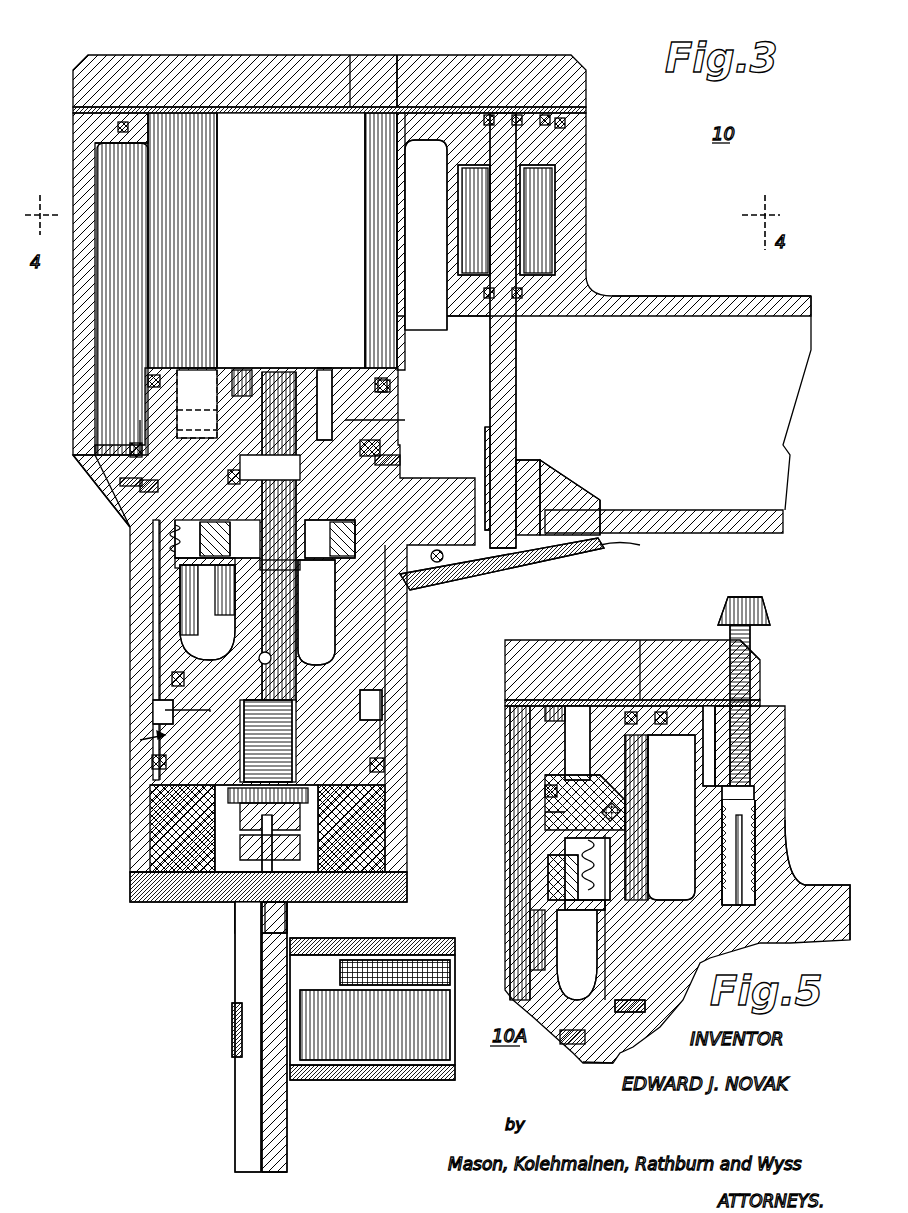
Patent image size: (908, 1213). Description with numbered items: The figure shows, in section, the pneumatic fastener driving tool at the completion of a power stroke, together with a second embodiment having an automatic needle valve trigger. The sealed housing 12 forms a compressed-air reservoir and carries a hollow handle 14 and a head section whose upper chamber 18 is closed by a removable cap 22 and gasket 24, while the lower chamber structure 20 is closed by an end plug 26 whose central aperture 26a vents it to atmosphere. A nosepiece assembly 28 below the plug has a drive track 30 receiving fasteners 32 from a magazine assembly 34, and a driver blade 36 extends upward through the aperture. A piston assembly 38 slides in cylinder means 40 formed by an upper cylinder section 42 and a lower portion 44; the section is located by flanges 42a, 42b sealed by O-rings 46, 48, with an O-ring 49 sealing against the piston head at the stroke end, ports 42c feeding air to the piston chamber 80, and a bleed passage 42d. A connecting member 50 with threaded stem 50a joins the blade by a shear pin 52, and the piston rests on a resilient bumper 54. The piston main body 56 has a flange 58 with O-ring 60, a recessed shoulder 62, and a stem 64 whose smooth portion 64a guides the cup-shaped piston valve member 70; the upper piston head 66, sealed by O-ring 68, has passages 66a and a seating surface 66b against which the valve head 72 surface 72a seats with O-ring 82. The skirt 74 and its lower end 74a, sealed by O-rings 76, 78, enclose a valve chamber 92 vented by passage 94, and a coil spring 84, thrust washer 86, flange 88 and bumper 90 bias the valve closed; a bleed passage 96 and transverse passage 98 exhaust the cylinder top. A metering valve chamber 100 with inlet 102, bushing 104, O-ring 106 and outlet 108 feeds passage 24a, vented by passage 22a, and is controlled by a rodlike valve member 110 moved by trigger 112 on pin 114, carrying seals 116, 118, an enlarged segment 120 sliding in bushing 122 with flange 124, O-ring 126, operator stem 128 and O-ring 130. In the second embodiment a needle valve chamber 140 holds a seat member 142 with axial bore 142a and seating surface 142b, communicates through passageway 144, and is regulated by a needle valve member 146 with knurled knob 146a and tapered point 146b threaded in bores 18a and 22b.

In FIG. 3, the housing 12 is at (755, 535).
In FIG. 5, the housing 12 is at (800, 878).
In FIG. 3, the hollow handle 14 is at (718, 296).
In FIG. 5, the hollow handle 14 is at (843, 892).
In FIG. 3, the upper chamber 18 is at (100, 303).
In FIG. 5, the upper chamber 18 is at (788, 745).
In FIG. 5, the threaded bore 18a is at (745, 727).
In FIG. 3, the lower chamber structure 20 is at (400, 800).
In FIG. 3, the upper end cap 22 is at (285, 57).
In FIG. 5, the upper end cap 22 is at (762, 670).
In FIG. 3, the vent passage 22a is at (398, 60).
In FIG. 5, the threaded bore 22b is at (752, 660).
In FIG. 3, the gasket 24 is at (566, 111).
In FIG. 5, the gasket 24 is at (762, 698).
In FIG. 3, the passage 24a is at (340, 107).
In FIG. 5, the passage 24a is at (642, 700).
In FIG. 3, the end plug 26 is at (130, 890).
In FIG. 3, the central aperture 26a is at (235, 915).
In FIG. 3, the nosepiece assembly 28 is at (232, 1083).
In FIG. 3, the drive track 30 is at (263, 962).
In FIG. 3, the fasteners 32 is at (272, 1000).
In FIG. 3, the magazine assembly 34 is at (435, 938).
In FIG. 3, the driver blade 36 is at (262, 1172).
In FIG. 3, the piston assembly 38 is at (340, 668).
In FIG. 5, the piston assembly 38 is at (577, 960).
In FIG. 3, the cylinder means 40 is at (252, 125).
In FIG. 3, the cylinder section 42 is at (145, 170).
In FIG. 5, the cylinder section 42 is at (652, 912).
In FIG. 3, the upper seating flange 42a is at (118, 116).
In FIG. 5, the upper seating flange 42a is at (671, 817).
In FIG. 3, the lower seating flange 42b is at (115, 467).
In FIG. 5, the ports 42c is at (645, 1008).
In FIG. 3, the bleed passage 42d is at (402, 460).
In FIG. 3, the lower cylinder portion 44 is at (170, 678).
In FIG. 3, the O-ring seal 46 is at (118, 128).
In FIG. 5, the O-ring seal 46 is at (660, 712).
In FIG. 3, the O-ring seal 48 is at (120, 482).
In FIG. 3, the O-ring 49 is at (128, 443).
In FIG. 3, the connecting member 50 is at (190, 902).
In FIG. 3, the threaded stem 50a is at (245, 760).
In FIG. 3, the shear pin 52 is at (305, 845).
In FIG. 3, the bumper 54 is at (150, 840).
In FIG. 3, the main body 56 is at (150, 742).
In FIG. 3, the annular flange 58 is at (300, 740).
In FIG. 3, the O-ring seal 60 is at (385, 766).
In FIG. 3, the recessed shoulder 62 is at (383, 697).
In FIG. 3, the stem 64 is at (300, 595).
In FIG. 5, the stem 64 is at (540, 975).
In FIG. 3, the cylindrical stem portion 64a is at (230, 470).
In FIG. 5, the cylindrical stem portion 64a is at (548, 814).
In FIG. 3, the piston head 66 is at (232, 368).
In FIG. 5, the piston head 66 is at (578, 706).
In FIG. 5, the passages 66a is at (562, 706).
In FIG. 3, the frustoconical seating surface 66b is at (370, 435).
In FIG. 3, the O-ring seal 68 is at (147, 381).
In FIG. 5, the O-ring seal 68 is at (630, 712).
In FIG. 3, the piston valve member 70 is at (160, 628).
In FIG. 3, the head 72 is at (160, 500).
In FIG. 5, the head 72 is at (610, 780).
In FIG. 3, the frustoconical surface 72a is at (382, 448).
In FIG. 3, the skirt 74 is at (160, 655).
In FIG. 5, the skirt 74 is at (612, 878).
In FIG. 3, the skirt lower end 74a is at (382, 710).
In FIG. 5, the skirt lower end 74a is at (590, 1060).
In FIG. 3, the upper O-ring seal 76 is at (281, 458).
In FIG. 5, the upper O-ring seal 76 is at (545, 792).
In FIG. 3, the lower O-ring 78 is at (153, 702).
In FIG. 5, the lower O-ring 78 is at (575, 1040).
In FIG. 3, the piston chamber 80 is at (150, 604).
In FIG. 3, the O-ring seal 82 is at (140, 488).
In FIG. 5, the O-ring seal 82 is at (618, 812).
In FIG. 3, the coil spring 84 is at (198, 550).
In FIG. 5, the coil spring 84 is at (592, 858).
In FIG. 3, the thrust washer 86 is at (175, 565).
In FIG. 5, the thrust washer 86 is at (588, 913).
In FIG. 3, the annular flange 88 is at (319, 612).
In FIG. 3, the annular bumper 90 is at (200, 540).
In FIG. 5, the annular bumper 90 is at (560, 865).
In FIG. 3, the piston valve chamber 92 is at (355, 652).
In FIG. 3, the drilled passage 94 is at (170, 712).
In FIG. 3, the bleed passage 96 is at (278, 372).
In FIG. 5, the bleed passage 96 is at (512, 739).
In FIG. 3, the transverse passage 98 is at (240, 616).
In FIG. 3, the metering valve chamber 100 is at (545, 225).
In FIG. 3, the inlet opening 102 is at (518, 300).
In FIG. 3, the shouldered bushing 104 is at (545, 150).
In FIG. 3, the O-ring seal 106 is at (558, 125).
In FIG. 3, the outlet aperture 108 is at (488, 150).
In FIG. 3, the valve member 110 is at (518, 355).
In FIG. 3, the trigger 112 is at (490, 590).
In FIG. 3, the pin 114 is at (440, 565).
In FIG. 3, the upper O-ring seal 116 is at (492, 113).
In FIG. 3, the lower O-ring seal 118 is at (470, 318).
In FIG. 3, the enlarged cylindrical segment 120 is at (520, 450).
In FIG. 3, the bushing 122 is at (560, 475).
In FIG. 3, the end flange 124 is at (545, 545).
In FIG. 3, the O-ring 126 is at (583, 497).
In FIG. 3, the operator stem 128 is at (502, 550).
In FIG. 3, the O-ring 130 is at (540, 475).
In FIG. 5, the needle valve chamber 140 is at (755, 790).
In FIG. 5, the seat member 142 is at (720, 908).
In FIG. 5, the axial bore 142a is at (742, 840).
In FIG. 5, the needle valve seating surface 142b is at (752, 825).
In FIG. 5, the passageway 144 is at (709, 706).
In FIG. 5, the needle valve member 146 is at (762, 600).
In FIG. 5, the knurled knob 146a is at (742, 597).
In FIG. 5, the conically tapered point 146b is at (752, 806).